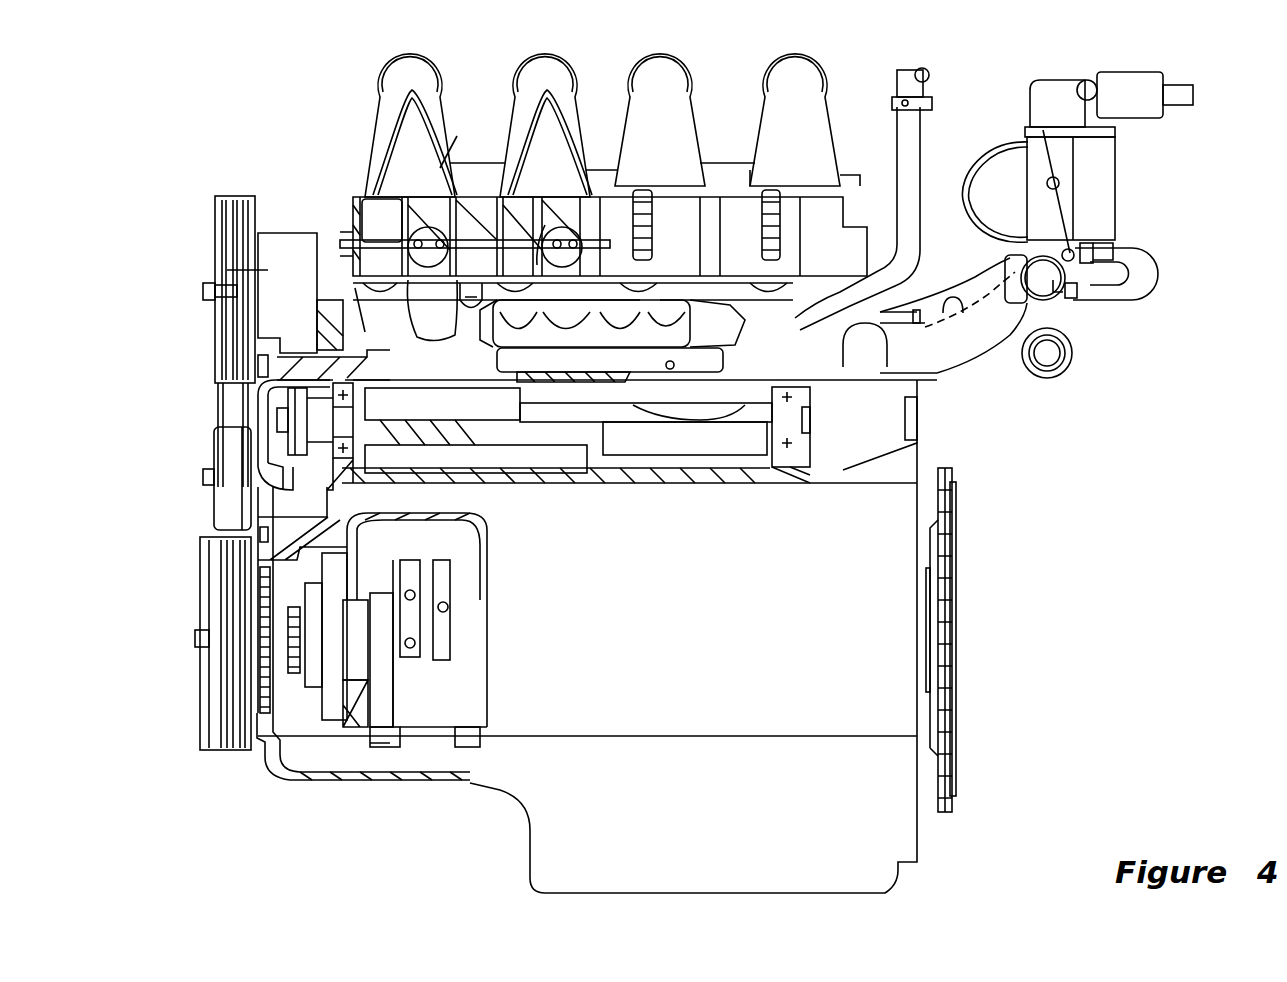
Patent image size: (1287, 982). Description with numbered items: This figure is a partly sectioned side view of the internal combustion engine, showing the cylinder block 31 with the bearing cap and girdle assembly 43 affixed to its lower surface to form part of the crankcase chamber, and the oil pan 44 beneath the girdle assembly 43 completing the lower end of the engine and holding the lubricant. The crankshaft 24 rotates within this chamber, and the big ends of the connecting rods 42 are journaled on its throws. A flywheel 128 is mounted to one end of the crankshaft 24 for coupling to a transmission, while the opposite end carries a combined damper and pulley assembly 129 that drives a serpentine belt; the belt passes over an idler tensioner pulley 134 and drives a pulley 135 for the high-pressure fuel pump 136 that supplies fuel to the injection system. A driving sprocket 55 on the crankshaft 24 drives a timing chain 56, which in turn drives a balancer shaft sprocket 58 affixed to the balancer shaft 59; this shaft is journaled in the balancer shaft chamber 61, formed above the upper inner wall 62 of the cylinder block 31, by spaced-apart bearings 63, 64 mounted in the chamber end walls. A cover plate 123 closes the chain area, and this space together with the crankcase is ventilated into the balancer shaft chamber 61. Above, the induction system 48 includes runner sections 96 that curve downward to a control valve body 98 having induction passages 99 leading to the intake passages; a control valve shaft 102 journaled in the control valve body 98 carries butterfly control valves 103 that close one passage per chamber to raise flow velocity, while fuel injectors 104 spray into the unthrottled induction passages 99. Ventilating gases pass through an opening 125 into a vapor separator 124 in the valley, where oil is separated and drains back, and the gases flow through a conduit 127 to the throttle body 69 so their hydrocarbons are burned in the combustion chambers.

The crankshaft 24 is at (425, 683).
The cylinder block 31 is at (928, 444).
The connecting rods 42 is at (460, 553).
The bearing cap and girdle assembly 43 is at (687, 728).
The oil pan 44 is at (533, 828).
The induction system 48 is at (348, 86).
The driving sprocket 55 is at (300, 677).
The timing chain 56 is at (265, 579).
The balancer shaft sprocket 58 is at (272, 450).
The balancer shaft 59 is at (712, 447).
The balancer shaft chamber 61 is at (593, 460).
The upper inner wall 62 is at (480, 480).
The bearing 63 is at (343, 378).
The bearing 64 is at (778, 460).
The throttle body 69 is at (1103, 226).
The runner sections 96 is at (428, 77).
The control valve body 98 is at (376, 188).
The induction passage 99 is at (372, 227).
The control valve shaft 102 is at (513, 260).
The control valves 103 is at (470, 134).
The fuel injectors 104 is at (643, 187).
The cover plate 123 is at (270, 420).
The vapor separator 124 is at (562, 292).
The opening 125 is at (550, 360).
The conduit 127 is at (923, 283).
The flywheel 128 is at (942, 790).
The damper and pulley assembly 129 is at (207, 735).
The idler tensioner pulley 134 is at (235, 509).
The pulley 135 is at (215, 335).
The high-pressure fuel pump 136 is at (227, 270).